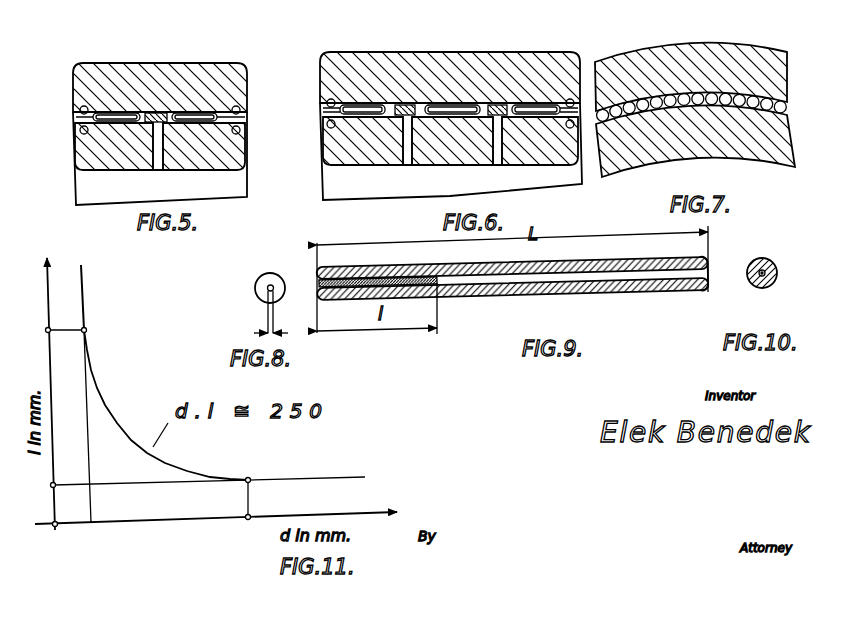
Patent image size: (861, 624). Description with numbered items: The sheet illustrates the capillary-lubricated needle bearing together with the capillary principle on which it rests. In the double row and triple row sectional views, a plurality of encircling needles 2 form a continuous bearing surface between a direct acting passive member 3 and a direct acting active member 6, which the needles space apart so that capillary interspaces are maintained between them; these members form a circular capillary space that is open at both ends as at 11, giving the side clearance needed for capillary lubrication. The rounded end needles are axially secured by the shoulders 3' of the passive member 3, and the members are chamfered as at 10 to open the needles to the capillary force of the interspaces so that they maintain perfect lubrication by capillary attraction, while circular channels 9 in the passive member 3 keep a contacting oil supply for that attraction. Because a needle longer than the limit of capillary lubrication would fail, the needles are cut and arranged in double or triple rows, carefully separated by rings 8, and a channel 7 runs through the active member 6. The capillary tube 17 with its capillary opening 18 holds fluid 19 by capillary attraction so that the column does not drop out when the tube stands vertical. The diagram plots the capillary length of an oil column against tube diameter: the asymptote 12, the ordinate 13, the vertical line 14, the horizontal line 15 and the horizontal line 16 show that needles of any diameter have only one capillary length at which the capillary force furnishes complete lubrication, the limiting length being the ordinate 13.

In FIG. 5, the needles 2 is at (140, 113).
In FIG. 6, the needles 2 is at (358, 110).
In FIG. 7, the needles 2 is at (645, 98).
In FIG. 5, the passive member 3 is at (160, 120).
In FIG. 6, the passive member 3 is at (451, 114).
In FIG. 7, the passive member 3 is at (691, 68).
In FIG. 6, the shoulders of passive member 3' is at (443, 93).
In FIG. 5, the active member 6 is at (160, 146).
In FIG. 6, the active member 6 is at (462, 145).
In FIG. 7, the active member 6 is at (650, 147).
In FIG. 5, the channel 7 is at (156, 160).
In FIG. 6, the channel 7 is at (408, 152).
In FIG. 5, the rings 8 is at (157, 113).
In FIG. 6, the rings 8 is at (405, 105).
In FIG. 5, the circular channels 9 is at (83, 110).
In FIG. 6, the circular channels 9 is at (330, 104).
In FIG. 5, the chamfers 10 is at (83, 133).
In FIG. 6, the chamfers 10 is at (330, 124).
In FIG. 5, the side clearance 11 is at (82, 122).
In FIG. 6, the side clearance 11 is at (330, 115).
In FIG. 11, the asymptote line 12 is at (83, 298).
In FIG. 11, the ordinate 13 is at (92, 460).
In FIG. 11, the vertical line 14 is at (249, 497).
In FIG. 11, the horizontal line 15 is at (67, 332).
In FIG. 11, the horizontal line 16 is at (152, 484).
In FIG. 8, the capillary tube 17 is at (273, 285).
In FIG. 9, the capillary tube 17 is at (625, 288).
In FIG. 10, the capillary tube 17 is at (773, 266).
In FIG. 9, the capillary opening 18 is at (686, 280).
In FIG. 10, the capillary opening 18 is at (758, 279).
In FIG. 8, the fluid 19 is at (267, 290).
In FIG. 9, the fluid 19 is at (415, 282).